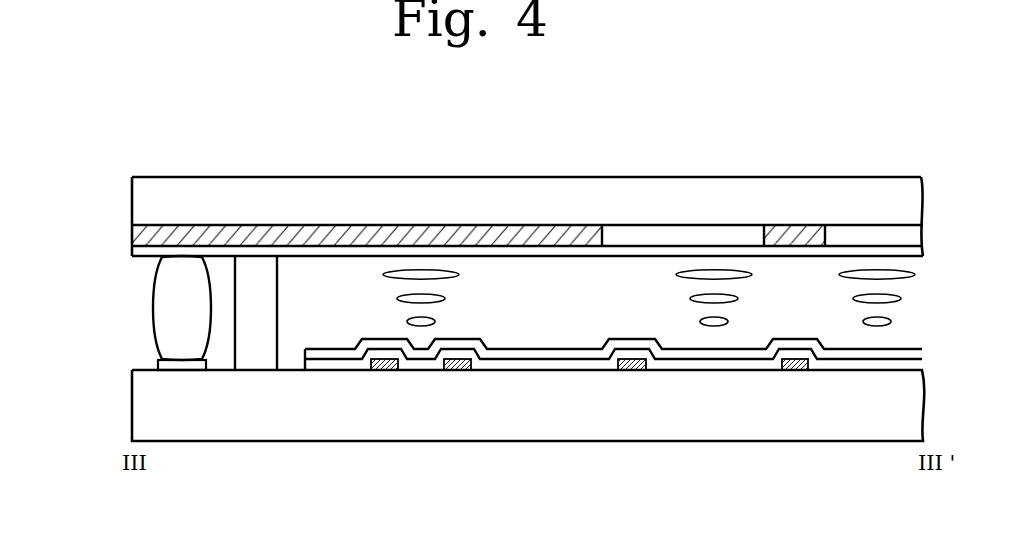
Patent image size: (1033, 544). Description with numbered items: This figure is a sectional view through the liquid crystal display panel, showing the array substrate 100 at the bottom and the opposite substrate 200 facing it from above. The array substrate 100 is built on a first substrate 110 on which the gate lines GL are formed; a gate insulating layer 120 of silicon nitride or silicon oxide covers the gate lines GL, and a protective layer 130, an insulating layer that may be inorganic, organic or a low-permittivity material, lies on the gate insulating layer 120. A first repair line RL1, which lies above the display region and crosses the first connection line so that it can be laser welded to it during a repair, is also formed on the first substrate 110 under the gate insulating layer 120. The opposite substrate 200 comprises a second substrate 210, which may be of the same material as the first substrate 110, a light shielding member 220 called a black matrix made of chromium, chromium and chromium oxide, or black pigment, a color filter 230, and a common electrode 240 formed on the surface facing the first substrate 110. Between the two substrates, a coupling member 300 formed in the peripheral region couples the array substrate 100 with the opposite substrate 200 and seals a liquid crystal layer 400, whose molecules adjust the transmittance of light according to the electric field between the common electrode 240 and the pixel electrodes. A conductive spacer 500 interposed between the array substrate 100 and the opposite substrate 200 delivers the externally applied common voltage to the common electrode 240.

The array substrate 100 is at (258, 445).
The first substrate 110 is at (140, 403).
The gate insulating layer 120 is at (693, 365).
The protective layer 130 is at (752, 355).
The gate line GL is at (630, 370).
The first repair line RL1 is at (453, 370).
The opposite substrate 200 is at (257, 173).
The second substrate 210 is at (140, 201).
The light shielding member 220 is at (140, 235).
The color filter 230 is at (645, 235).
The common electrode 240 is at (708, 252).
The coupling member 300 is at (246, 329).
The liquid crystal layer 400 is at (303, 312).
The conductive spacer 500 is at (168, 281).